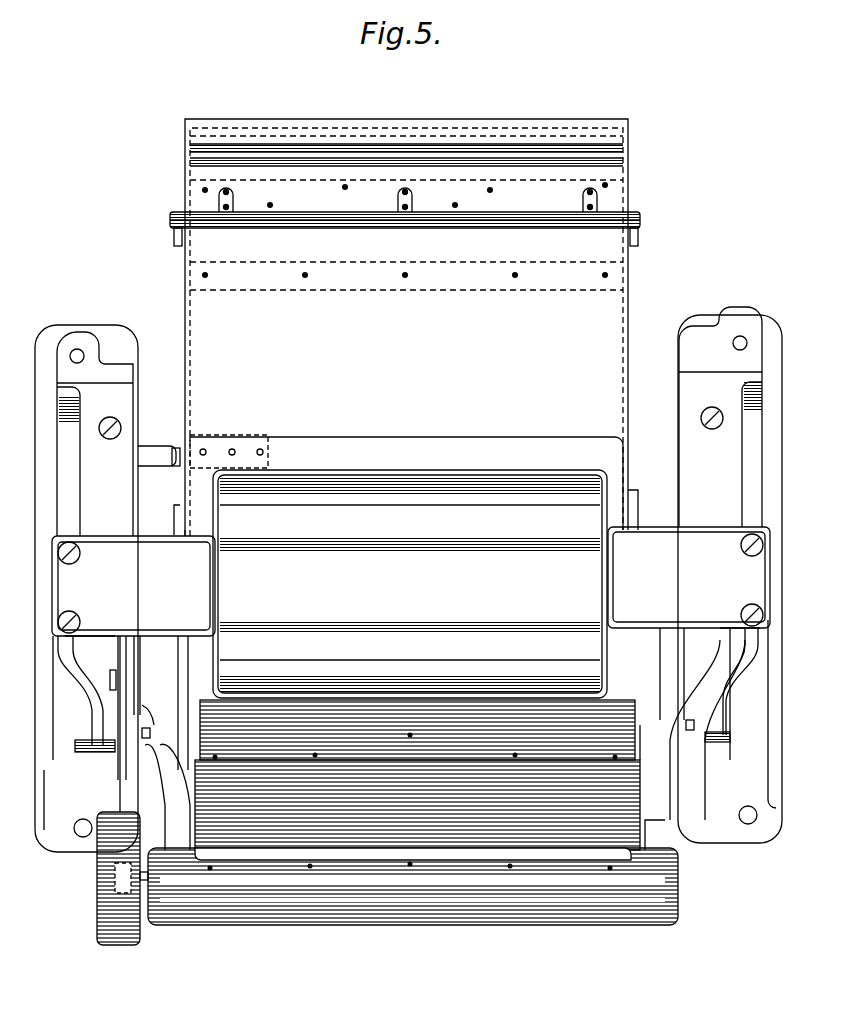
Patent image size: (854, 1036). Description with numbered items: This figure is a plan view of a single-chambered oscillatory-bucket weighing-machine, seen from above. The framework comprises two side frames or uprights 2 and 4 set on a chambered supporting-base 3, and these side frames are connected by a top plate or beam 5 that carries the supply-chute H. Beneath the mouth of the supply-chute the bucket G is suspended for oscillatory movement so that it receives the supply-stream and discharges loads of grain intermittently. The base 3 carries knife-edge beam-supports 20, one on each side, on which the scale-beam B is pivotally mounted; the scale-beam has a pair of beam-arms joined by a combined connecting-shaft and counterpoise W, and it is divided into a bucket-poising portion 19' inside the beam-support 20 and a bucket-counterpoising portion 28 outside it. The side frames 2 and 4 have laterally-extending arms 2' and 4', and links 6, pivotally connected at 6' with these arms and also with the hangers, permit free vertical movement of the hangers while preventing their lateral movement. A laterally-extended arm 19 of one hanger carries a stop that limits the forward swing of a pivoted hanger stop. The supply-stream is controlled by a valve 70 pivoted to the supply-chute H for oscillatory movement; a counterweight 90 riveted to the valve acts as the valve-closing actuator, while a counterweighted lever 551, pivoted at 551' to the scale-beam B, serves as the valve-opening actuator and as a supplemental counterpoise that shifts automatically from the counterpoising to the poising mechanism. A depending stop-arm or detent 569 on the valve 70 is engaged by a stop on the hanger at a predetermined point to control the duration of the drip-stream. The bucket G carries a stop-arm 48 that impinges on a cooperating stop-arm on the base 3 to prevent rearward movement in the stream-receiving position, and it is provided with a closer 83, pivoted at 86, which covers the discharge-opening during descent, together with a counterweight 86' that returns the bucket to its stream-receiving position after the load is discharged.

The closer 83 is at (200, 178).
The closer pivot 86 is at (390, 241).
The bucket G is at (406, 327).
The stop-arm 48 is at (188, 447).
The laterally-extended arm of hanger 19 is at (159, 439).
The supply-chute H is at (410, 584).
The top plate or beam 5 is at (685, 608).
The side frame or upright 2 is at (86, 588).
The chambered supporting-base 3 is at (697, 345).
The side frame or upright 4 is at (744, 595).
The lever pivot 551' is at (117, 693).
The link 6 is at (409, 686).
The bucket-poising portion of scale-beam 19' is at (418, 674).
The depending stop-arm or detent 569 is at (156, 712).
The knife-edge beam-support 20 is at (150, 733).
The laterally-extending arm 2' is at (58, 698).
The link pivot 6' is at (398, 740).
The valve 70 is at (212, 735).
The lever 551 is at (108, 790).
The scale-beam B is at (651, 742).
The bucket-counterpoising portion of scale-beam 28 is at (668, 788).
The laterally-extending arm 4' is at (750, 694).
The counterweight 90 is at (505, 710).
The combined connecting-shaft and counterpoise W is at (426, 886).
The bucket counterweight 86' is at (410, 902).